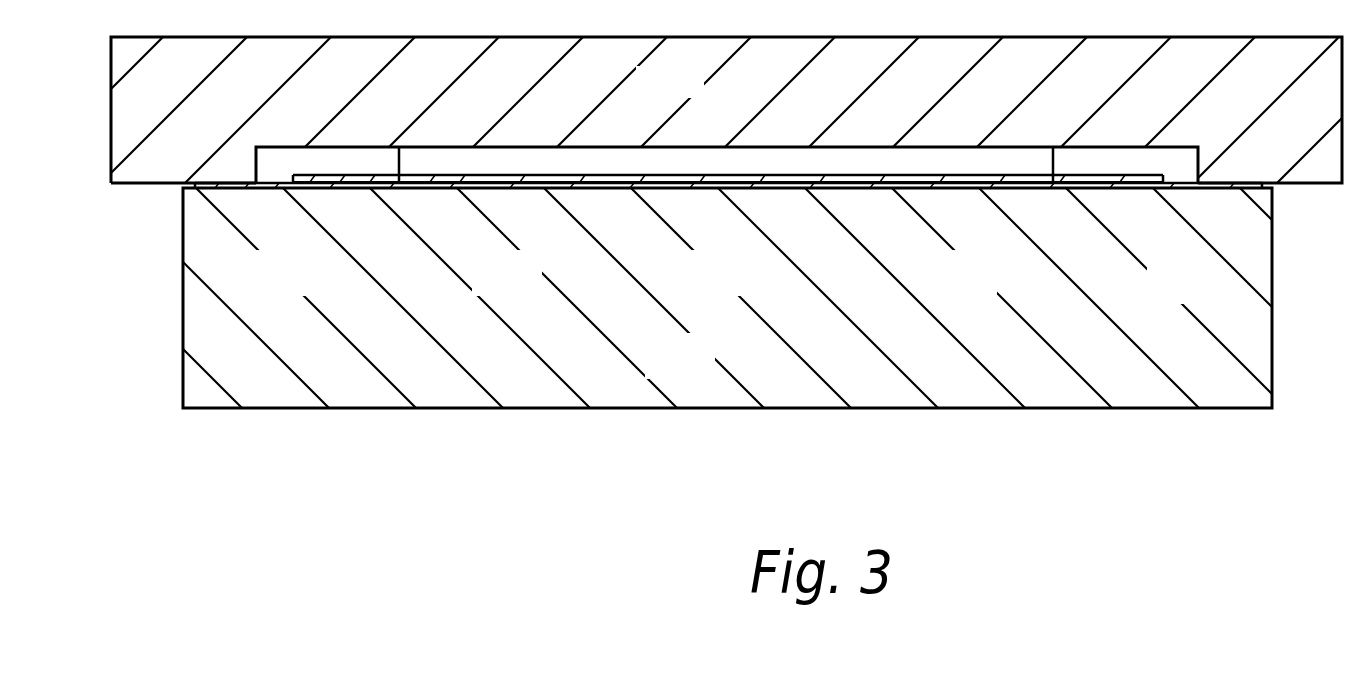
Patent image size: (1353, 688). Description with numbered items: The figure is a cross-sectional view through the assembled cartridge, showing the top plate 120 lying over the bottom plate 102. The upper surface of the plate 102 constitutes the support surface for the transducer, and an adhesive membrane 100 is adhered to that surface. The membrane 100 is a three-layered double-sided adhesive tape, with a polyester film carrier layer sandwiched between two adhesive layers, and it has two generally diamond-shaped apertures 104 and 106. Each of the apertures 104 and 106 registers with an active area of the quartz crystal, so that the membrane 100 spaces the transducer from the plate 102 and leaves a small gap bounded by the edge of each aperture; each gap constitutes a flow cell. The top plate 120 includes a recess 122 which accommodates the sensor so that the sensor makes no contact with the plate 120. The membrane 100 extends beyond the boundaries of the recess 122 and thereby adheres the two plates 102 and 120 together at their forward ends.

The adhesive membrane 100 is at (317, 192).
The plate 102 is at (711, 374).
The aperture 104 is at (930, 190).
The aperture 106 is at (507, 192).
The top plate 120 is at (703, 102).
The recess 122 is at (858, 156).